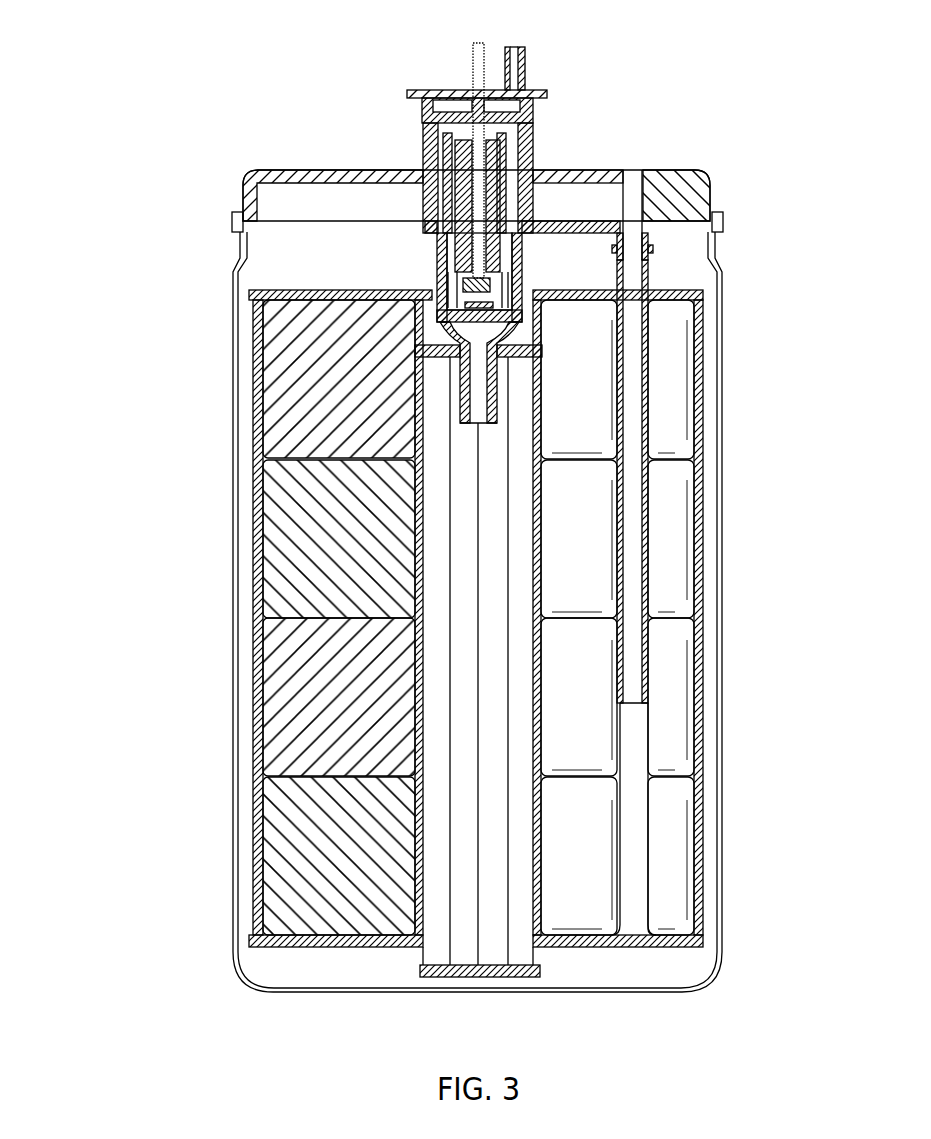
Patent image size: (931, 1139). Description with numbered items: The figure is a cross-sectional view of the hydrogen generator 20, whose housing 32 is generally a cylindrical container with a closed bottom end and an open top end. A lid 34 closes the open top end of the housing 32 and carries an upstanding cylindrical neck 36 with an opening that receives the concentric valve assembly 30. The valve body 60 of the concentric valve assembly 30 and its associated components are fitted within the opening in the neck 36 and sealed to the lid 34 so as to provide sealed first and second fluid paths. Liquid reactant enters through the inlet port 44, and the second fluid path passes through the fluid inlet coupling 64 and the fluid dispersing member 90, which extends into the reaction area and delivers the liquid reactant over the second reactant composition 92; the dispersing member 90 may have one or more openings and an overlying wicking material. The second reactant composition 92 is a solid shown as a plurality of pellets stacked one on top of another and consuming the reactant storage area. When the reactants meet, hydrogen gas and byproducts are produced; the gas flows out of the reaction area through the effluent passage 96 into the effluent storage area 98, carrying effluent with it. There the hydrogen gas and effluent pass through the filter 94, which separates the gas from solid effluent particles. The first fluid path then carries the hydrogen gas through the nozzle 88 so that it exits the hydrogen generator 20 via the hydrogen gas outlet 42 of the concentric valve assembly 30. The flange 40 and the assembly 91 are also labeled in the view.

The hydrogen generator 20 is at (128, 148).
The concentric valve assembly 30 is at (560, 125).
The housing 32 is at (237, 438).
The lid 34 is at (714, 172).
The neck 36 is at (426, 142).
The terminal flange 40 is at (418, 90).
The hydrogen gas outlet 42 is at (471, 56).
The inlet port 44 is at (526, 62).
The valve body 60 is at (437, 257).
The fluid inlet coupling 64 is at (655, 238).
The nozzle 88 is at (463, 404).
The fluid dispersing member 90 is at (652, 528).
The cathode assembly 91 is at (712, 642).
The second reactant composition 92 is at (280, 683).
The filter 94 is at (445, 855).
The effluent passage 96 is at (633, 965).
The effluent storage area 98 is at (548, 962).